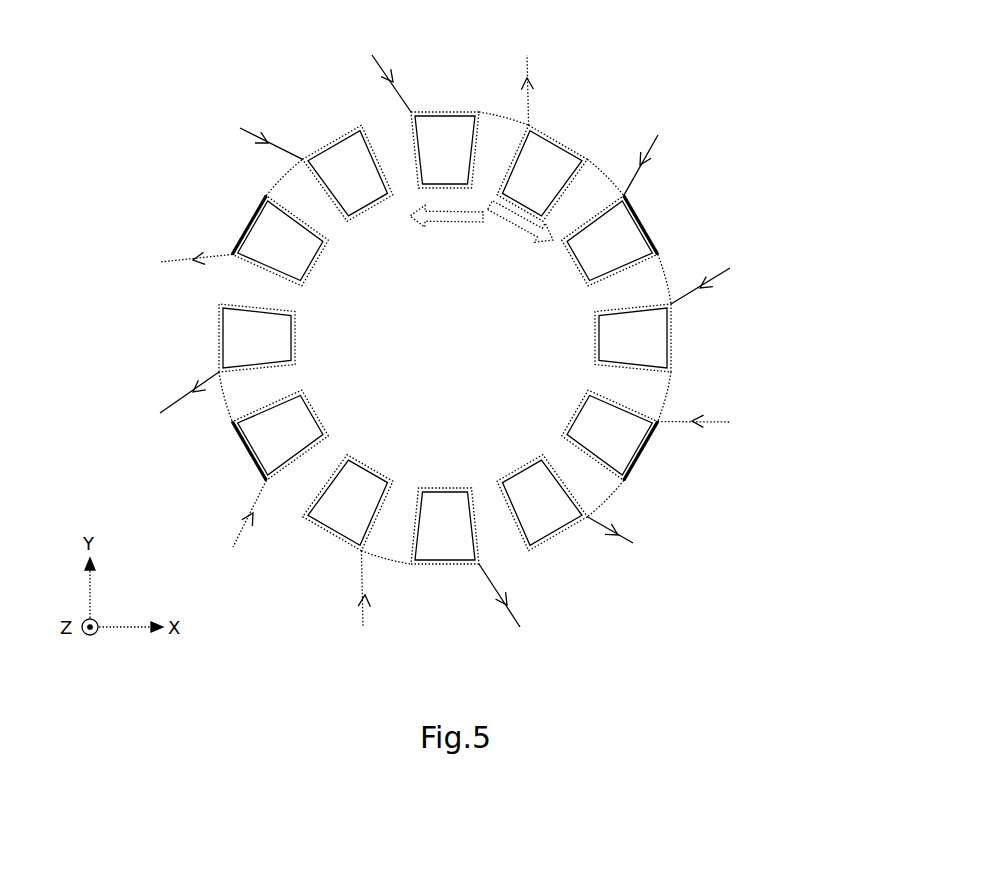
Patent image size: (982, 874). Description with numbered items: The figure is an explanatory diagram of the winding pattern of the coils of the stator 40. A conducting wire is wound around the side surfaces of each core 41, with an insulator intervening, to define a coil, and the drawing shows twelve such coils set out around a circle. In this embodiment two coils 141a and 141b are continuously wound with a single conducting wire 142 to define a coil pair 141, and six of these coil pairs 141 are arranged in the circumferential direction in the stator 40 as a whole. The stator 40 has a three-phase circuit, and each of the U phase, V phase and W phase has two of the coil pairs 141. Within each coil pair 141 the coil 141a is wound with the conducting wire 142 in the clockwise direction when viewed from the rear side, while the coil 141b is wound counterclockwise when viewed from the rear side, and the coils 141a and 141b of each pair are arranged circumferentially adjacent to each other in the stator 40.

The stator 40 is at (655, 72).
The core 41 is at (405, 128).
The coil pair 141 is at (486, 336).
The coil 141a is at (447, 227).
The coil 141b is at (510, 224).
The conducting wire 142 is at (390, 70).